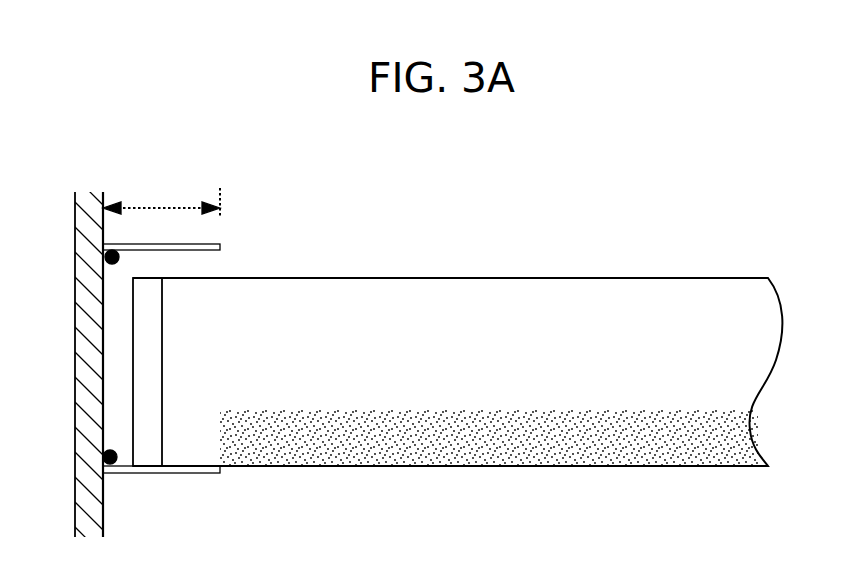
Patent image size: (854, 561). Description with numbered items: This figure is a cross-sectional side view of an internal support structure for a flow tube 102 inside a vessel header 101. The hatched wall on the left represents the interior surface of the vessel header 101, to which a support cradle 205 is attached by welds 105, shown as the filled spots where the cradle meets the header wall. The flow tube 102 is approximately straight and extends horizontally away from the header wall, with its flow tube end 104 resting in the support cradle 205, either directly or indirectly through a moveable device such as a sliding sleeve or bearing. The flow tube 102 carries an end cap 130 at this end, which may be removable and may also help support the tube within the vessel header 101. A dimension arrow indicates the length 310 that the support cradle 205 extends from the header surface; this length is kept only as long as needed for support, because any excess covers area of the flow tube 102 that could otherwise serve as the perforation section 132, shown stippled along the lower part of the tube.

The vessel header 101 is at (103, 192).
The length 310 is at (172, 203).
The flow tube 102 is at (458, 277).
The flow tube end 104 is at (293, 312).
The end cap 130 is at (163, 335).
The perforation section 132 is at (468, 448).
The support cradle 205 is at (160, 474).
The weld 105 is at (112, 464).